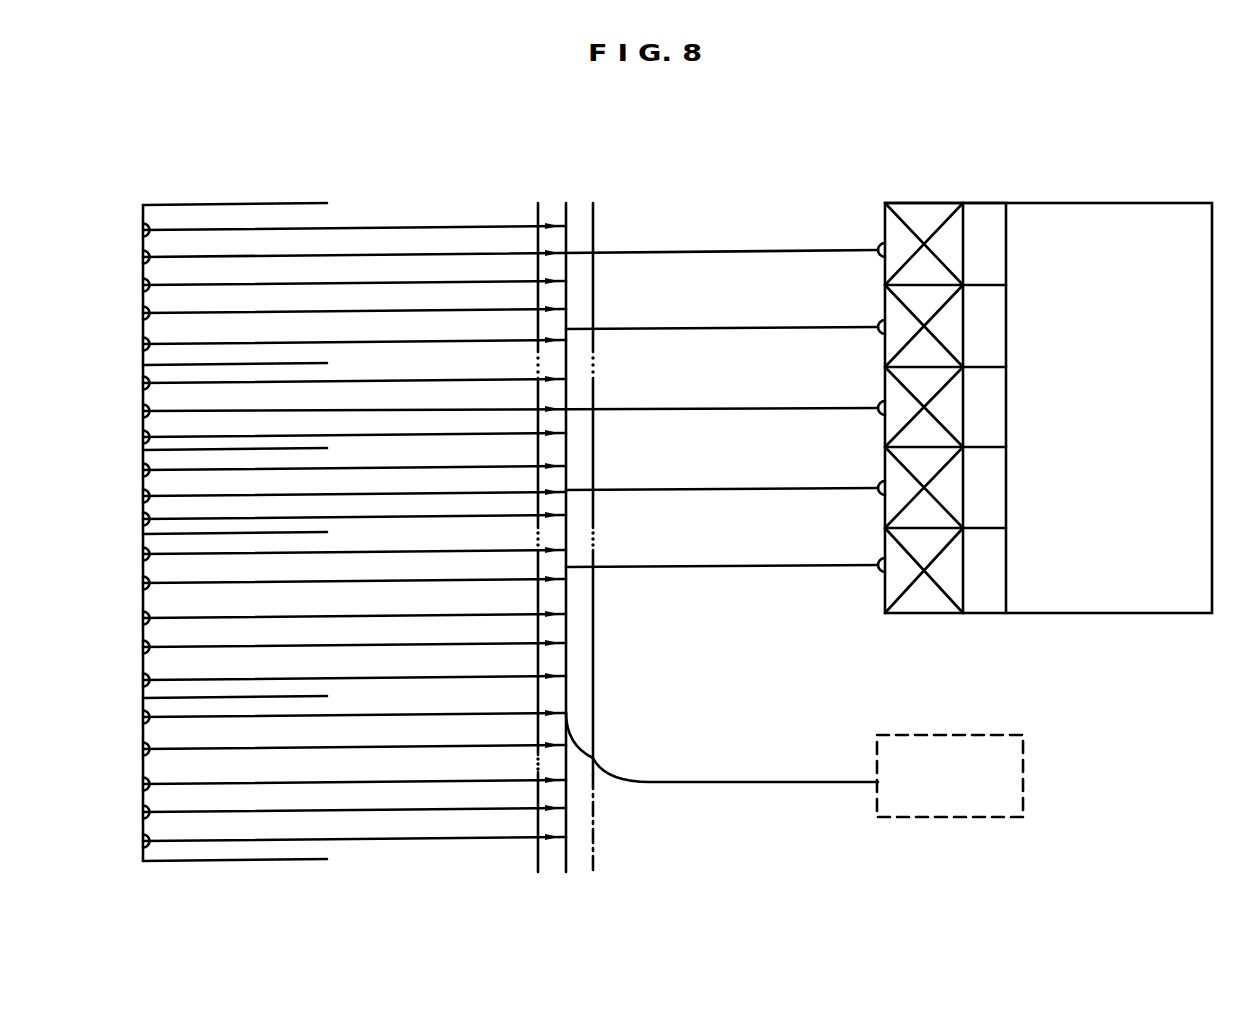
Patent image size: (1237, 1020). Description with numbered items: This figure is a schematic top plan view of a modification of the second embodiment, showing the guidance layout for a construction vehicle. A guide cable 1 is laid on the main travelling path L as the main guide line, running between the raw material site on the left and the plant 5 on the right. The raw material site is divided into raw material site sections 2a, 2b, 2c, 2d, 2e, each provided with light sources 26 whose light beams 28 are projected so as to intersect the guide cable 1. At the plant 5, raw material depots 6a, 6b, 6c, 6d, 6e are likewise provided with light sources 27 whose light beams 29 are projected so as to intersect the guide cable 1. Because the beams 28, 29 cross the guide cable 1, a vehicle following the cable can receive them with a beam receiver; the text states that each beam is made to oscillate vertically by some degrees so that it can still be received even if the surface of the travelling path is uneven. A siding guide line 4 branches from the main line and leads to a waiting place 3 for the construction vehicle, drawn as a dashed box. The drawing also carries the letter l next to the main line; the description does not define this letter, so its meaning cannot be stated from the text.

The guide cable 1 is at (132, 374).
The raw material site section 2a is at (206, 205).
The raw material site section 2b is at (158, 421).
The raw material site section 2c is at (158, 500).
The raw material site section 2d is at (158, 657).
The raw material site section 2e is at (186, 861).
The light source 26 is at (142, 283).
The light beam 28 is at (375, 228).
The light beam 29 is at (660, 328).
The light source 27 is at (874, 243).
The plant 5 is at (1048, 375).
The raw material depot 6a is at (917, 204).
The raw material depot 6b is at (958, 315).
The raw material depot 6c is at (958, 412).
The raw material depot 6d is at (958, 479).
The raw material depot 6e is at (958, 567).
The siding guide line 4 is at (767, 782).
The waiting place 3 is at (916, 815).
The fiber bus line l is at (566, 627).
The main travelling path L is at (596, 693).